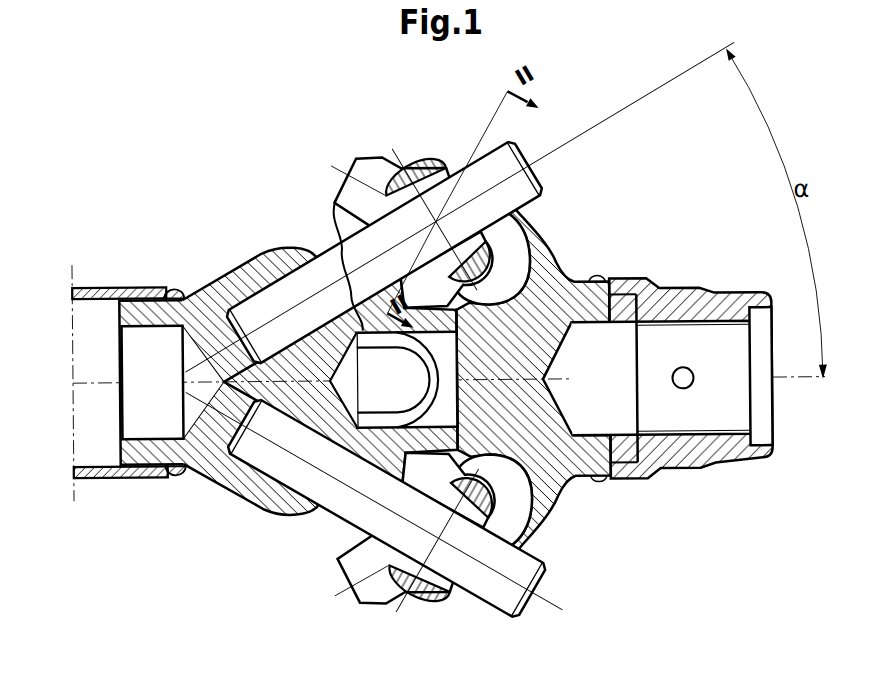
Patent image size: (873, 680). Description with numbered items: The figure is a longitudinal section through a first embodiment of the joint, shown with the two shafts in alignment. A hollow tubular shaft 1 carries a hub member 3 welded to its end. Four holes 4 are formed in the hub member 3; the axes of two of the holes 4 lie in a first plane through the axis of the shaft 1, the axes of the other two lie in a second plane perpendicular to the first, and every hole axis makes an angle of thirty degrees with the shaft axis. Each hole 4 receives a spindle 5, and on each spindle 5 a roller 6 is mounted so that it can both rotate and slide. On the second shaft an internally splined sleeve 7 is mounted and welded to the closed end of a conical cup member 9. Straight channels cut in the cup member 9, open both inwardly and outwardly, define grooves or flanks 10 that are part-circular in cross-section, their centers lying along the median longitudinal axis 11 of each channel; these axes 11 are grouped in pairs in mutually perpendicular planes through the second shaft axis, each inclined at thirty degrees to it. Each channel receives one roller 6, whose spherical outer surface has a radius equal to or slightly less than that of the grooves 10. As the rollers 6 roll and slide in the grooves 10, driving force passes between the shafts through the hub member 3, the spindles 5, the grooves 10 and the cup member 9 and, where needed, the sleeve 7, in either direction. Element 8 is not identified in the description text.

The hollow tubular shaft 1 is at (133, 291).
The hub member 3 is at (206, 289).
The holes 4 is at (252, 260).
The spindle 5 is at (320, 259).
The roller 6 is at (424, 165).
The internally splined sleeve 7 is at (712, 294).
The second yoke 8 is at (549, 262).
The conical cup member 9 is at (345, 550).
The grooves 10 is at (336, 228).
The median longitudinal axis 11 is at (340, 167).